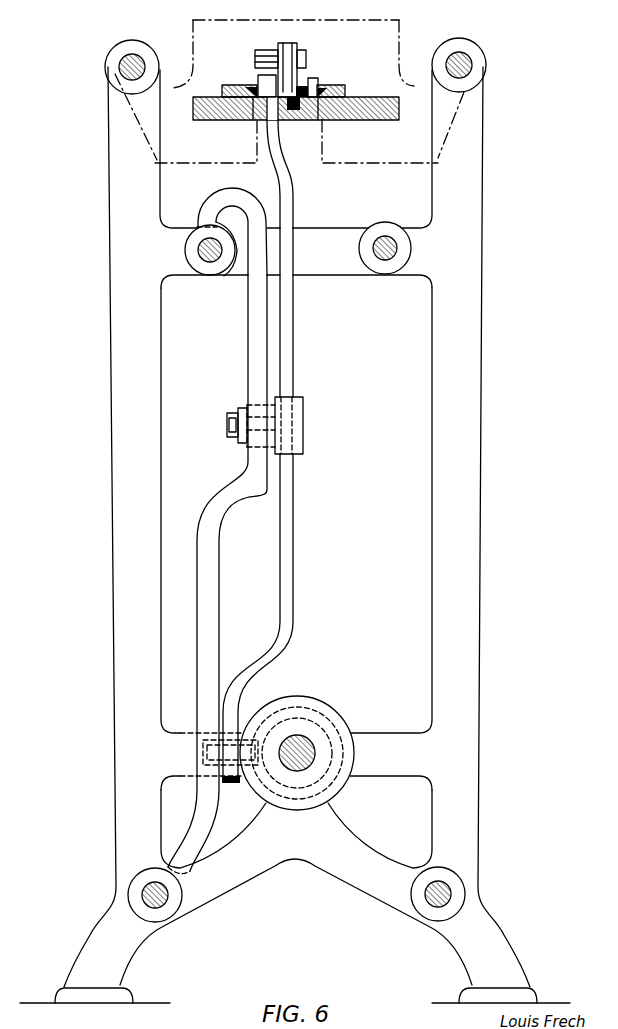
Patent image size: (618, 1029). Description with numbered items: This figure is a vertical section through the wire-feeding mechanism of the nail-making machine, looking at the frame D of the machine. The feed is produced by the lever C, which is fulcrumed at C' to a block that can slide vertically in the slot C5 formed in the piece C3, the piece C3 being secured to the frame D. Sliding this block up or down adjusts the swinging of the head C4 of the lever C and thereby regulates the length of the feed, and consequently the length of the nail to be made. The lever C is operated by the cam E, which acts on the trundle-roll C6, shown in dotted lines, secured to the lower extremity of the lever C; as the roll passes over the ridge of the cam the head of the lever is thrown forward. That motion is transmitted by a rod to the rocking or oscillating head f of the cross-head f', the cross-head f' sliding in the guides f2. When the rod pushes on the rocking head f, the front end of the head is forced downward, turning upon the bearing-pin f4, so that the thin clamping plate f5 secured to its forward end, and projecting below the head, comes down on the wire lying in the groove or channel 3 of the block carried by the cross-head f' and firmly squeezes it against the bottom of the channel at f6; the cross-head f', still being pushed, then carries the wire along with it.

The frame D is at (447, 560).
The cam E is at (320, 713).
The lever C is at (279, 505).
The fulcrum C' is at (307, 425).
The piece C3 is at (207, 602).
The head of lever C4 is at (270, 57).
The slot C5 is at (248, 443).
The trundle-roll C6 is at (247, 763).
The rocking or oscillating head f is at (296, 73).
The cross-head f' is at (242, 128).
The guides f2 is at (246, 88).
The bearing-pin f4 is at (328, 90).
The thin clamping plate f5 is at (299, 90).
The clamping point f6 is at (283, 138).
The groove or channel 3 is at (301, 110).